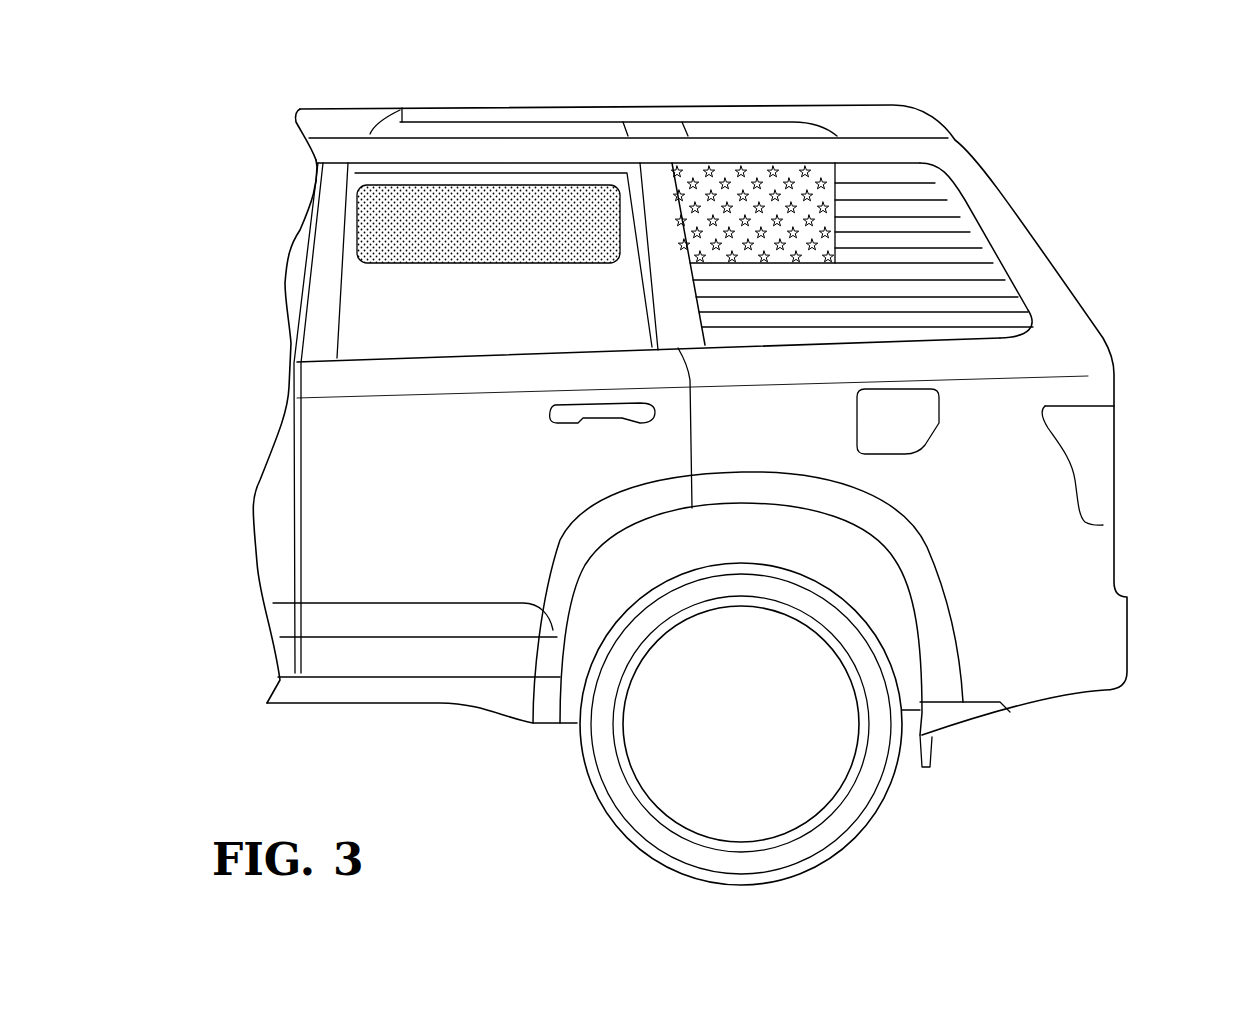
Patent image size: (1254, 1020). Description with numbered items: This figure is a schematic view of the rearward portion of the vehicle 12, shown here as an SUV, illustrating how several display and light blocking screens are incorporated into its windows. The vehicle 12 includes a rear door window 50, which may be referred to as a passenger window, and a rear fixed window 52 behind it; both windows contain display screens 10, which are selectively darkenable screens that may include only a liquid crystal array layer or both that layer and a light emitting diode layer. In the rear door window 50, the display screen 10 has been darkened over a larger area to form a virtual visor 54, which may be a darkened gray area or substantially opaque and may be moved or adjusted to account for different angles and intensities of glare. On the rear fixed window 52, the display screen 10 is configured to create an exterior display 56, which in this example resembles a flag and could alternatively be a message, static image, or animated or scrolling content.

The display screen 10 is at (995, 268).
The vehicle 12 is at (182, 104).
The rear door window 50 is at (343, 293).
The rear fixed window 52 is at (880, 165).
The virtual visor 54 is at (497, 205).
The exterior display 56 is at (803, 178).